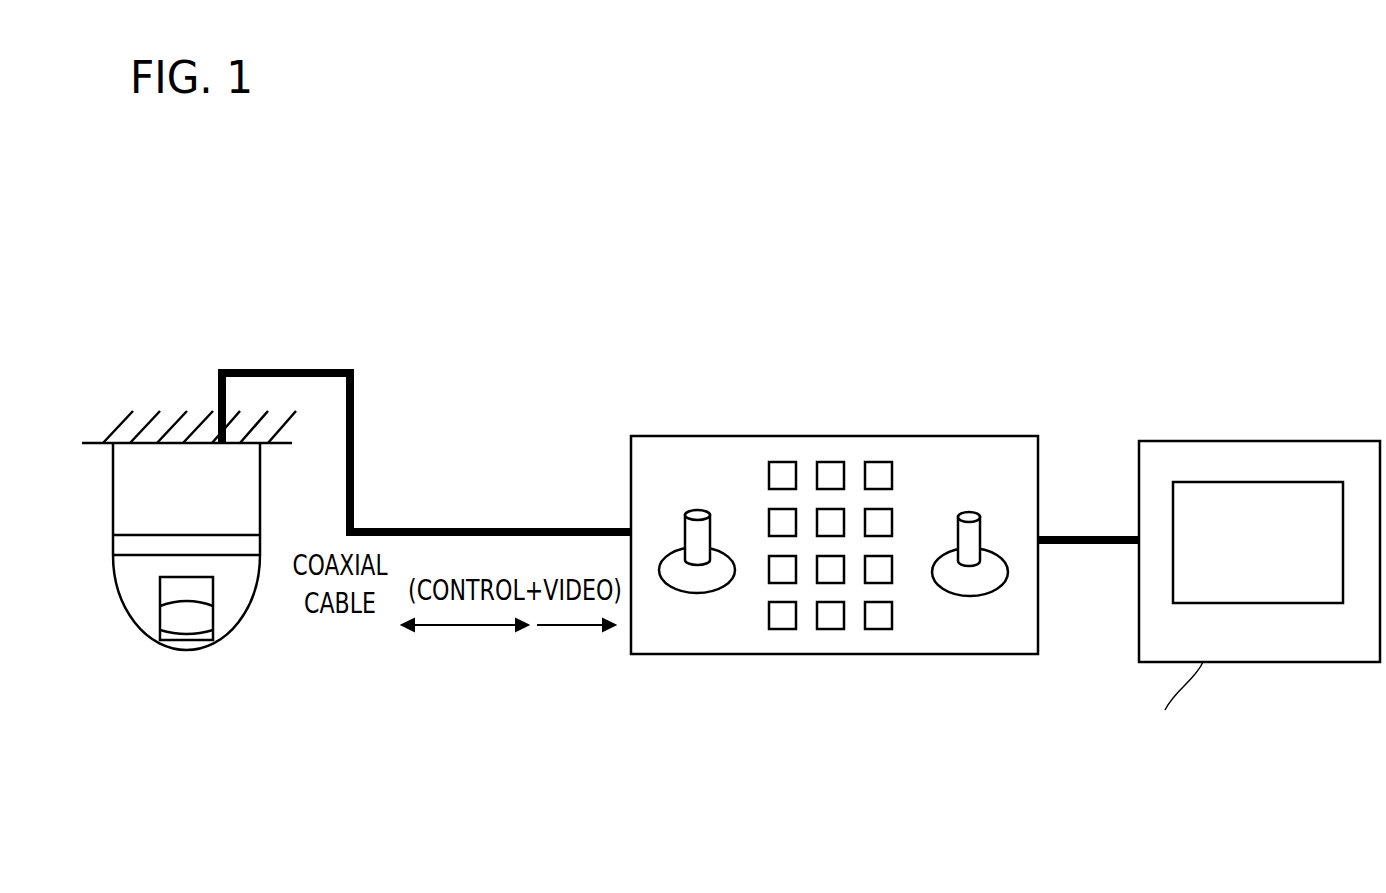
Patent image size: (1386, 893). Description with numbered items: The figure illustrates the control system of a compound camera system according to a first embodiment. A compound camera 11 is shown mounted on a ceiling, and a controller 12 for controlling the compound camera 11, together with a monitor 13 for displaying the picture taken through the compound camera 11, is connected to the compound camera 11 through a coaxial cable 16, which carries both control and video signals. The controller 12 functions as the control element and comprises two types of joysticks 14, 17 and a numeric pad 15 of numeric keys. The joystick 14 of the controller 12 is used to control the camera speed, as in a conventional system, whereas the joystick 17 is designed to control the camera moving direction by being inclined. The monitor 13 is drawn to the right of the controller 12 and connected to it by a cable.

The compound camera 11 is at (189, 511).
The controller 12 is at (834, 524).
The monitor 13 is at (1209, 578).
The joystick 14 is at (984, 540).
The numeric pad 15 is at (893, 478).
The coaxial cable 16 is at (426, 427).
The joystick 17 is at (683, 533).